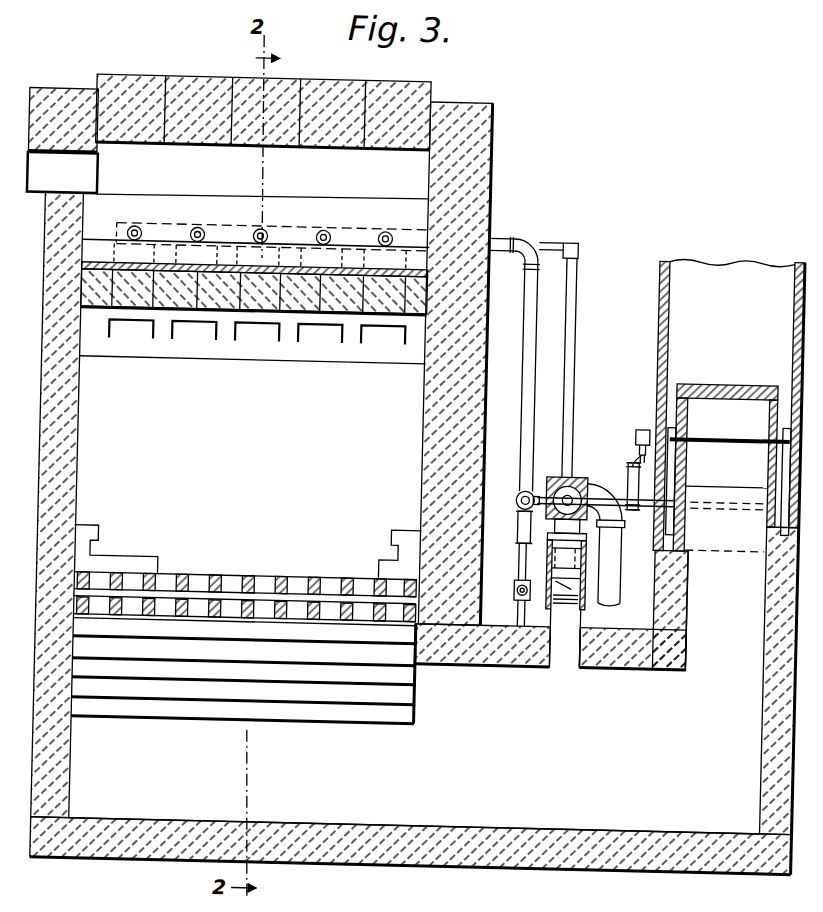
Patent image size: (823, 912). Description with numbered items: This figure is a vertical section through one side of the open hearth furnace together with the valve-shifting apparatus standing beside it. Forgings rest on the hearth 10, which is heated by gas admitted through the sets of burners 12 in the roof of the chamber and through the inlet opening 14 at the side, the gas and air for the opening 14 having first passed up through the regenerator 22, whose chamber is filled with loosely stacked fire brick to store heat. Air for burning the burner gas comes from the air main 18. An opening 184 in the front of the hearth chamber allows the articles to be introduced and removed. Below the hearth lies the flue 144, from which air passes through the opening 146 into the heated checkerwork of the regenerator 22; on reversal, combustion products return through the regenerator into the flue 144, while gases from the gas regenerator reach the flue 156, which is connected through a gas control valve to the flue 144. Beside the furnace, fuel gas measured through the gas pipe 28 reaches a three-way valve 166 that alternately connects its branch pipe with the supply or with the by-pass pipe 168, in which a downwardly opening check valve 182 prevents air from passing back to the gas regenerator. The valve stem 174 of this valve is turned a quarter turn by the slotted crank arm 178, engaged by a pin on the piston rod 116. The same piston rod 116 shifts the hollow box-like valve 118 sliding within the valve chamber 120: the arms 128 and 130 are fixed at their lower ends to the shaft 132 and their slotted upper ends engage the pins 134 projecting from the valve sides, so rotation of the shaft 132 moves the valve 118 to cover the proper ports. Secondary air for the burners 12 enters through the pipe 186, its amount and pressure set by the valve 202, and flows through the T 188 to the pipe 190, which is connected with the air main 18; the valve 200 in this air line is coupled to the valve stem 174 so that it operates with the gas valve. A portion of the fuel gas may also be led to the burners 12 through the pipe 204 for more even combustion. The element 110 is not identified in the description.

The hearth 10 is at (214, 264).
The burners 12 is at (326, 243).
The inlet opening 14 is at (131, 332).
The air main 18 is at (502, 234).
The regenerator 22 is at (278, 534).
The gas pipe 28 is at (626, 589).
The connecting pipe 110 is at (641, 457).
The piston rod 116 is at (645, 425).
The valve 118 is at (737, 381).
The valve chamber 120 is at (666, 350).
The arm 128 is at (671, 456).
The arm 130 is at (787, 467).
The shaft 132 is at (722, 502).
The pins 134 is at (771, 424).
The flue 144 is at (381, 776).
The opening 146 is at (222, 692).
The flue 156 is at (510, 631).
The three-way valve 166 is at (604, 471).
The by-pass pipe 168 is at (565, 647).
The valve stem 174 is at (618, 500).
The crank arm 178 is at (641, 458).
The check valve 182 is at (606, 600).
The opening 184 is at (82, 186).
The pipe 186 is at (543, 515).
The T 188 is at (527, 531).
The pipe 190 is at (525, 425).
The valve 200 is at (522, 501).
The valve 202 is at (522, 585).
The pipe 204 is at (573, 320).